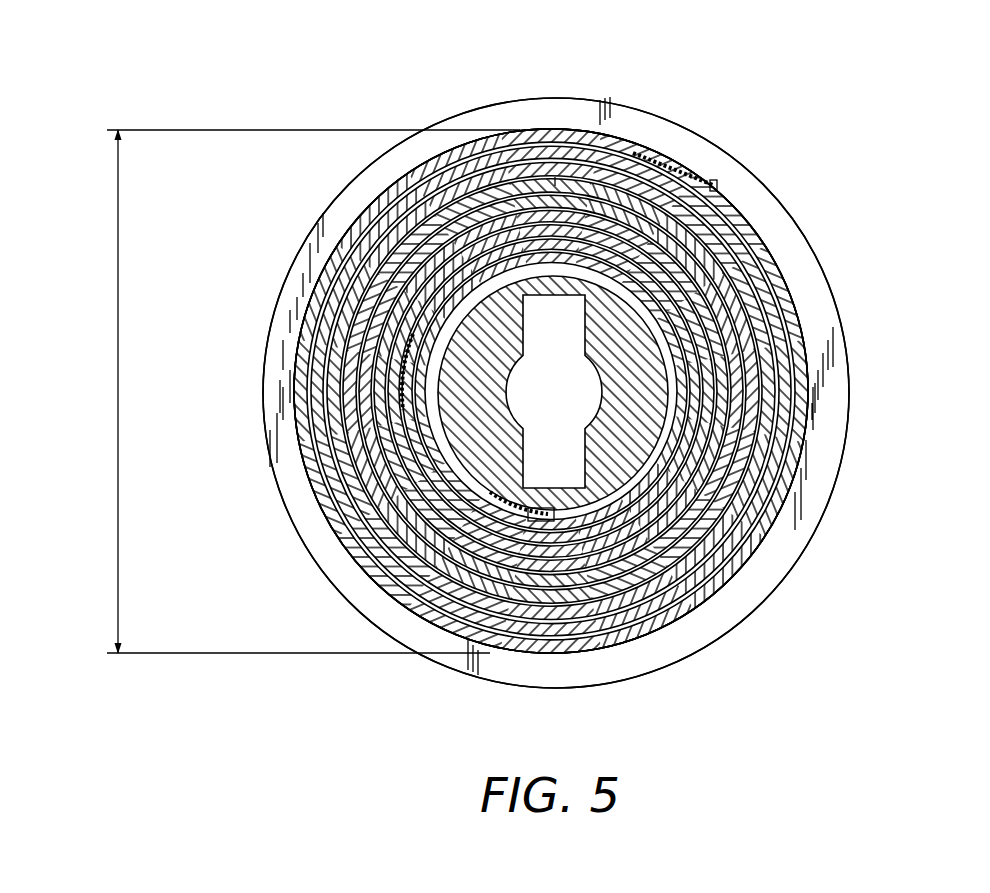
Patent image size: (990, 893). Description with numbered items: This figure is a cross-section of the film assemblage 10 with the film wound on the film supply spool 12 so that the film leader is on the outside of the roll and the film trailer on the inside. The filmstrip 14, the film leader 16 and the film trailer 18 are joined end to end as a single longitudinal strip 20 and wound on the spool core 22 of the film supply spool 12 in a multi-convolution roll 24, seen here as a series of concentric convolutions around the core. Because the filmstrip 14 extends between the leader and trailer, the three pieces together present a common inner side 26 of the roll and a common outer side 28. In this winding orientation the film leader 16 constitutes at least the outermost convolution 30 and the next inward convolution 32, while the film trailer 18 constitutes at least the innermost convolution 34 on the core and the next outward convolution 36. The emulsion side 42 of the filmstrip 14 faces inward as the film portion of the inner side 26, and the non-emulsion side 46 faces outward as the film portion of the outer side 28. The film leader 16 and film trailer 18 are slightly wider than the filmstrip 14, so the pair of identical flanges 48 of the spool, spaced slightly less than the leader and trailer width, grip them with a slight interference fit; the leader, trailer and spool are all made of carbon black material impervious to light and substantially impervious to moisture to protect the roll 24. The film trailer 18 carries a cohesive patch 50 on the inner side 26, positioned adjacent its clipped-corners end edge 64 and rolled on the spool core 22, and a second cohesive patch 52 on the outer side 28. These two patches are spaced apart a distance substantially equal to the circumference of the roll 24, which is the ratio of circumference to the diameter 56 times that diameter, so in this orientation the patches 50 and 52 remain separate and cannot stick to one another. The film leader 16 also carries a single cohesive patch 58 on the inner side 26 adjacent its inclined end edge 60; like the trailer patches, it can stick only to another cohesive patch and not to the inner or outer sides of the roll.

The film assemblage 10 is at (362, 82).
The film supply spool 12 is at (262, 417).
The filmstrip 14 is at (423, 232).
The film leader 16 is at (521, 130).
The film trailer 18 is at (443, 318).
The single longitudinal strip 20 is at (310, 493).
The spool core 22 is at (612, 384).
The multi-convolution roll 24 is at (338, 535).
The inner side of the roll 26 is at (738, 257).
The outer side of the roll 28 is at (770, 290).
The outermost convolution 30 is at (800, 357).
The next inward convolution 32 is at (780, 385).
The innermost convolution 34 is at (693, 430).
The next outward convolution 36 is at (700, 450).
The emulsion side 42 is at (705, 462).
The non-emulsion side 46 is at (690, 500).
The flanges 48 is at (745, 608).
The cohesive patch 50 is at (545, 503).
The cohesive patch 52 is at (400, 375).
The diameter of the roll 56 is at (118, 393).
The cohesive patch 58 is at (677, 168).
The inclined end edge 60 is at (720, 188).
The clipped-corners end edge 64 is at (560, 517).